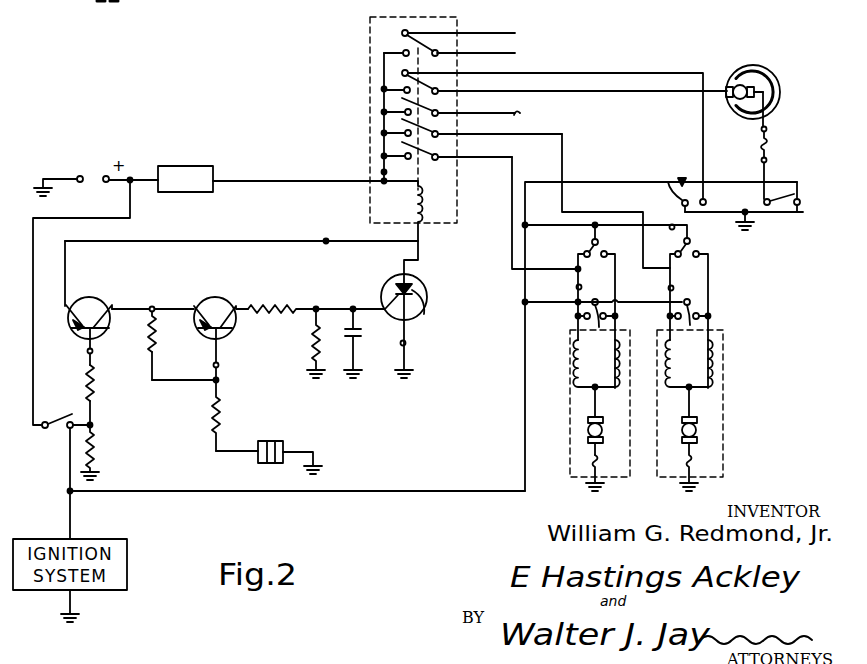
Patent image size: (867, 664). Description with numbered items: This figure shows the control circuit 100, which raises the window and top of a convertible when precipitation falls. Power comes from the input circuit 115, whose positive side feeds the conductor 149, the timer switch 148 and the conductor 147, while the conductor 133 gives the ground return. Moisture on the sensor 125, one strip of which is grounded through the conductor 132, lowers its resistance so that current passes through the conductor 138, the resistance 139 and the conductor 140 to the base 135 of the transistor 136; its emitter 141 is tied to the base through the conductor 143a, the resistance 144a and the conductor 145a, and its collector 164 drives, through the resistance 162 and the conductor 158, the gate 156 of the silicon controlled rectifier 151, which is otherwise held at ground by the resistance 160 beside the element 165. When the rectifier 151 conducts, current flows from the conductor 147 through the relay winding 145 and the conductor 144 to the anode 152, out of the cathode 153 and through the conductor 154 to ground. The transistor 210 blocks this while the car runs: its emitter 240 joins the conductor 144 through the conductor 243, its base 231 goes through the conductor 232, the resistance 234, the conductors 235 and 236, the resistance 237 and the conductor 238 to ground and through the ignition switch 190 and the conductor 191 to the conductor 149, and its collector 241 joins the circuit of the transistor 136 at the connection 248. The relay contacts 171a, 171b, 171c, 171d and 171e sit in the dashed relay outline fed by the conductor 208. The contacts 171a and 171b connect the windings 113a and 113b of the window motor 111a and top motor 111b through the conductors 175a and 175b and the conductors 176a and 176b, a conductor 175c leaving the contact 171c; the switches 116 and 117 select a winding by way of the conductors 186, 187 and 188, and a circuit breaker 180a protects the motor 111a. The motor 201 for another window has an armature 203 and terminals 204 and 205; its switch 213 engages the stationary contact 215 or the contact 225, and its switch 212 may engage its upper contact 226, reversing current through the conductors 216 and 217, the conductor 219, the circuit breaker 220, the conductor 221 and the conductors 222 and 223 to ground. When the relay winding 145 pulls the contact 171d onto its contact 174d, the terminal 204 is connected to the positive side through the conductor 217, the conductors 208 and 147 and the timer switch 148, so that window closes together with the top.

The control circuit 100 is at (300, 114).
The input circuit 115 is at (98, 156).
The conductor 133 is at (60, 168).
The conductor 149 is at (136, 176).
The timer switch 148 is at (196, 166).
The conductor 147 is at (286, 182).
The conductor 191 is at (34, 282).
The ignition switch 190 is at (68, 420).
The conductor 243 is at (330, 233).
The transistor 210 is at (90, 283).
The emitter 240 is at (70, 328).
The base 231 is at (104, 329).
The collector 241 is at (108, 309).
The junction 248 is at (130, 307).
The conductor 232 is at (86, 351).
The resistance 234 is at (86, 388).
The conductor 235 is at (92, 412).
The conductor 236 is at (92, 426).
The resistance 237 is at (92, 442).
The conductor 238 is at (98, 460).
The conductor 143a is at (150, 340).
The resistance 144a is at (150, 360).
The conductor 145a is at (150, 380).
The emitter 141 is at (194, 307).
The base 135 is at (232, 332).
The transistor 136 is at (192, 337).
The collector 164 is at (220, 301).
The conductor 140 is at (212, 364).
The resistance 139 is at (212, 432).
The conductor 138 is at (226, 452).
The sensor 125 is at (280, 438).
The conductor 132 is at (315, 460).
The resistance 162 is at (284, 304).
The conductor 158 is at (318, 308).
The resistance 160 is at (310, 356).
The capacitor 165 is at (356, 337).
The gate 156 is at (384, 308).
The silicon controlled rectifier 151 is at (422, 298).
The conductor 144 is at (418, 258).
The anode 152 is at (410, 286).
The cathode 153 is at (426, 314).
The conductor 154 is at (406, 343).
The contact 174d is at (384, 88).
The conductor 208 is at (384, 172).
The relay winding 145 is at (413, 210).
The relay contact 171e is at (436, 46).
The relay contact 171d is at (440, 76).
The relay contact 171c is at (440, 96).
The relay contact 171b is at (438, 118).
The relay contact 171a is at (438, 138).
The conductor 216 is at (632, 73).
The conductor 217 is at (642, 90).
The conductor 175c is at (520, 114).
The conductor 175b is at (580, 132).
The conductor 175a is at (512, 218).
The motor 201 is at (770, 68).
The armature 203 is at (746, 68).
The terminal 204 is at (724, 82).
The terminal 205 is at (768, 84).
The conductor 219 is at (762, 128).
The circuit breaker 220 is at (762, 144).
The conductor 221 is at (762, 160).
The conductor 188 is at (605, 184).
The upper contact 226 is at (804, 162).
The switch 212 is at (794, 195).
The conductor 222 is at (794, 212).
The conductor 223 is at (736, 228).
The switch 213 is at (668, 182).
The stationary contact 215 is at (690, 166).
The contact 225 is at (680, 208).
The switch 117 is at (592, 242).
The conductor 187 is at (674, 230).
The conductor 176a is at (576, 288).
The conductor 176b is at (670, 288).
The conductor 186 is at (658, 306).
The winding 113a is at (572, 372).
The winding 113b is at (688, 365).
The switch 116 is at (595, 398).
The circuit breaker 180a is at (592, 460).
The motor 111a is at (570, 404).
The motor 111b is at (724, 397).